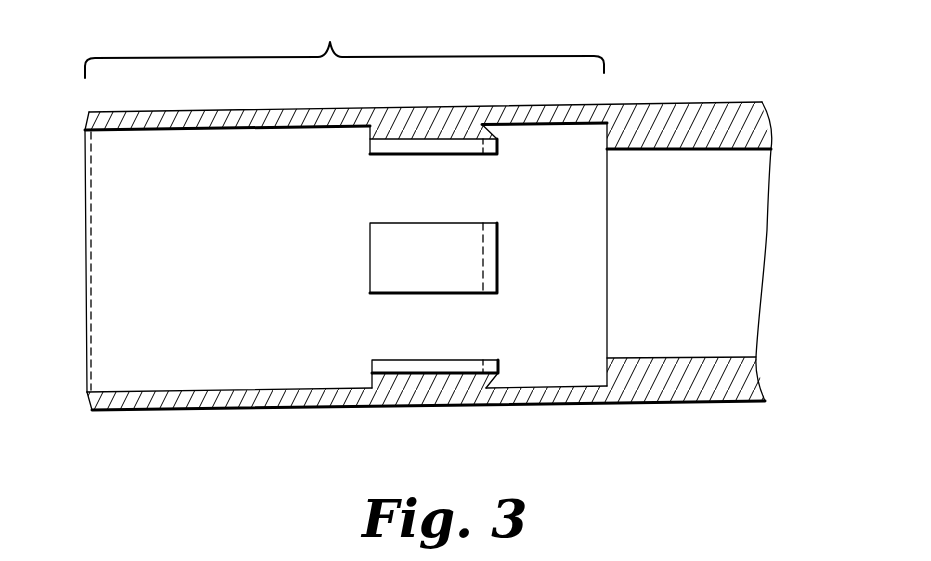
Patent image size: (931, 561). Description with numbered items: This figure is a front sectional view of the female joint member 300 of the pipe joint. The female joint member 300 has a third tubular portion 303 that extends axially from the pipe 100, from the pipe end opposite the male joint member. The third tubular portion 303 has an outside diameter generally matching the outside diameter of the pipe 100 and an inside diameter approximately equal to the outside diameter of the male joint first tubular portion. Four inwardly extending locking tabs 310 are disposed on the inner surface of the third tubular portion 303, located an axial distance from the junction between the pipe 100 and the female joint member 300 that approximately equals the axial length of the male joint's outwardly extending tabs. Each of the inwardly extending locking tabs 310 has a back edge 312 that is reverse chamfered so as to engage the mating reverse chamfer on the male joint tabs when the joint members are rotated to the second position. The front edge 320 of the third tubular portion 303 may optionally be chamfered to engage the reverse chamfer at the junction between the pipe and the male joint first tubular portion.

The pipe 100 is at (706, 113).
The female joint member 300 is at (344, 45).
The third tubular portion 303 is at (256, 121).
The inwardly extending locking tabs 310 is at (434, 146).
The back edge 312 is at (490, 127).
The front edge 320 is at (87, 403).